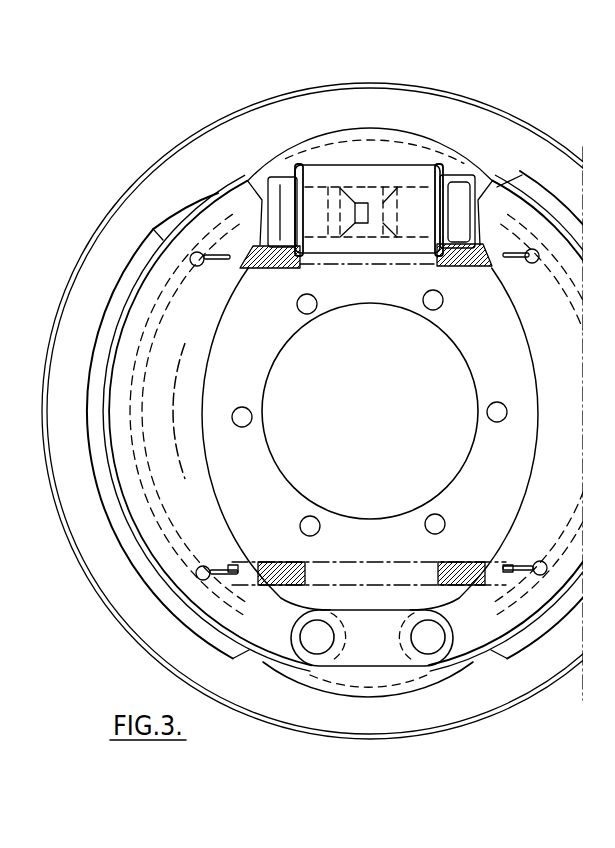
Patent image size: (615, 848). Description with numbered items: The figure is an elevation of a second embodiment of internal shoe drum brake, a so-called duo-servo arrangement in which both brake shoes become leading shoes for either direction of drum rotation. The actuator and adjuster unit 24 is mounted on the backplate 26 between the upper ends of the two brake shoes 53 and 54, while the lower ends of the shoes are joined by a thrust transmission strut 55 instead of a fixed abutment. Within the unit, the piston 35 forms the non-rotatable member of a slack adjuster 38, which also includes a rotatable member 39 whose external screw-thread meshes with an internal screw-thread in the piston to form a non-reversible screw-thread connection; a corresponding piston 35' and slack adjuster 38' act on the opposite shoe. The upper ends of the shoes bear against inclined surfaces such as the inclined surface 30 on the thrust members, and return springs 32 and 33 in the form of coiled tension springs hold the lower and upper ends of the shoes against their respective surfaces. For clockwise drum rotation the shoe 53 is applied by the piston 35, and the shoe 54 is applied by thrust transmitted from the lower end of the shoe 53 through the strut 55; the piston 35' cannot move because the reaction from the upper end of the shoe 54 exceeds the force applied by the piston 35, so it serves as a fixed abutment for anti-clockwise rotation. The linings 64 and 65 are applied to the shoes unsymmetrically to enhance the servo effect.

The actuator and adjuster unit 24 is at (475, 162).
The backplate 26 is at (198, 167).
The inclined surface 30 is at (492, 262).
The return spring 32 is at (340, 562).
The return spring 33 is at (266, 276).
The piston 35 is at (294, 171).
The piston 35' is at (451, 178).
The slack adjuster 38 is at (336, 163).
The slack adjuster 38' is at (400, 165).
The rotatable member 39 is at (337, 236).
The brake shoe 53 is at (167, 553).
The brake shoe 54 is at (547, 355).
The thrust transmission strut 55 is at (383, 620).
The lining 64 is at (218, 643).
The lining 65 is at (537, 195).